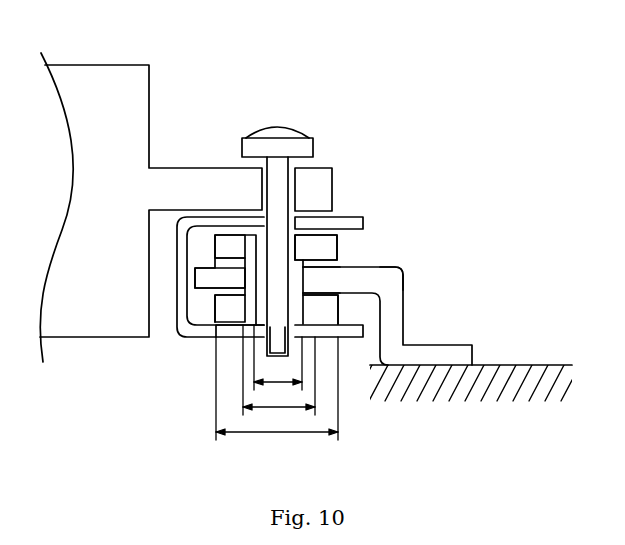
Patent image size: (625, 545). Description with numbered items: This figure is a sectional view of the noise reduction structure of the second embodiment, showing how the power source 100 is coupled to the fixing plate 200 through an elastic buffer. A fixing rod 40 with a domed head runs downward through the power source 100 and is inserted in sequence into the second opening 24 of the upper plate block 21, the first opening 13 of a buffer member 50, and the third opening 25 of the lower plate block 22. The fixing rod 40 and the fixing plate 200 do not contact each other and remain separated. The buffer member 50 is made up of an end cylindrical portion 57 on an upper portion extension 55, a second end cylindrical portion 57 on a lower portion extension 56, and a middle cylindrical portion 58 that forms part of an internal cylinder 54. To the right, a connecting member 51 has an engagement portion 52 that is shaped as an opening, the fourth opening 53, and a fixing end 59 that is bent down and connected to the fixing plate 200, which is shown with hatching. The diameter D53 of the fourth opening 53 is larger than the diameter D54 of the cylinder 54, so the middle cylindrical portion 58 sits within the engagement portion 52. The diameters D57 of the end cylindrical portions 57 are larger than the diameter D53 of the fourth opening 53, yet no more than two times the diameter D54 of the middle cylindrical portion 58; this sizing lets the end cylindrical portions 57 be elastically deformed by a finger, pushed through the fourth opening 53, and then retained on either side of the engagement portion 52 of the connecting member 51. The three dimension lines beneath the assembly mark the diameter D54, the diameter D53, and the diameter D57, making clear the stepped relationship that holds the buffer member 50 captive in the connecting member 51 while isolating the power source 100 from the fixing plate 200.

The power source 100 is at (90, 64).
The fixing rod 40 is at (292, 127).
The first opening 13 is at (297, 247).
The upper plate block 21 is at (348, 216).
The second opening 24 is at (258, 222).
The lower plate block 22 is at (225, 327).
The third opening 25 is at (268, 330).
The upper portion extension 55 is at (215, 250).
The end cylindrical portion 57 is at (215, 258).
The lower portion extension 56 is at (220, 305).
The buffer member 50 is at (337, 256).
The cylinder 54 is at (302, 268).
The middle cylindrical portion 58 is at (320, 309).
The fourth opening 53 is at (313, 276).
The engagement portion 52 is at (316, 279).
The fixing end 59 is at (452, 342).
The connecting member 51 is at (406, 272).
The fixing plate 200 is at (498, 365).
The diameter of the cylinder D54 is at (296, 383).
The diameter of the fourth opening D53 is at (304, 408).
The diameter of the end cylindrical portion D57 is at (320, 433).